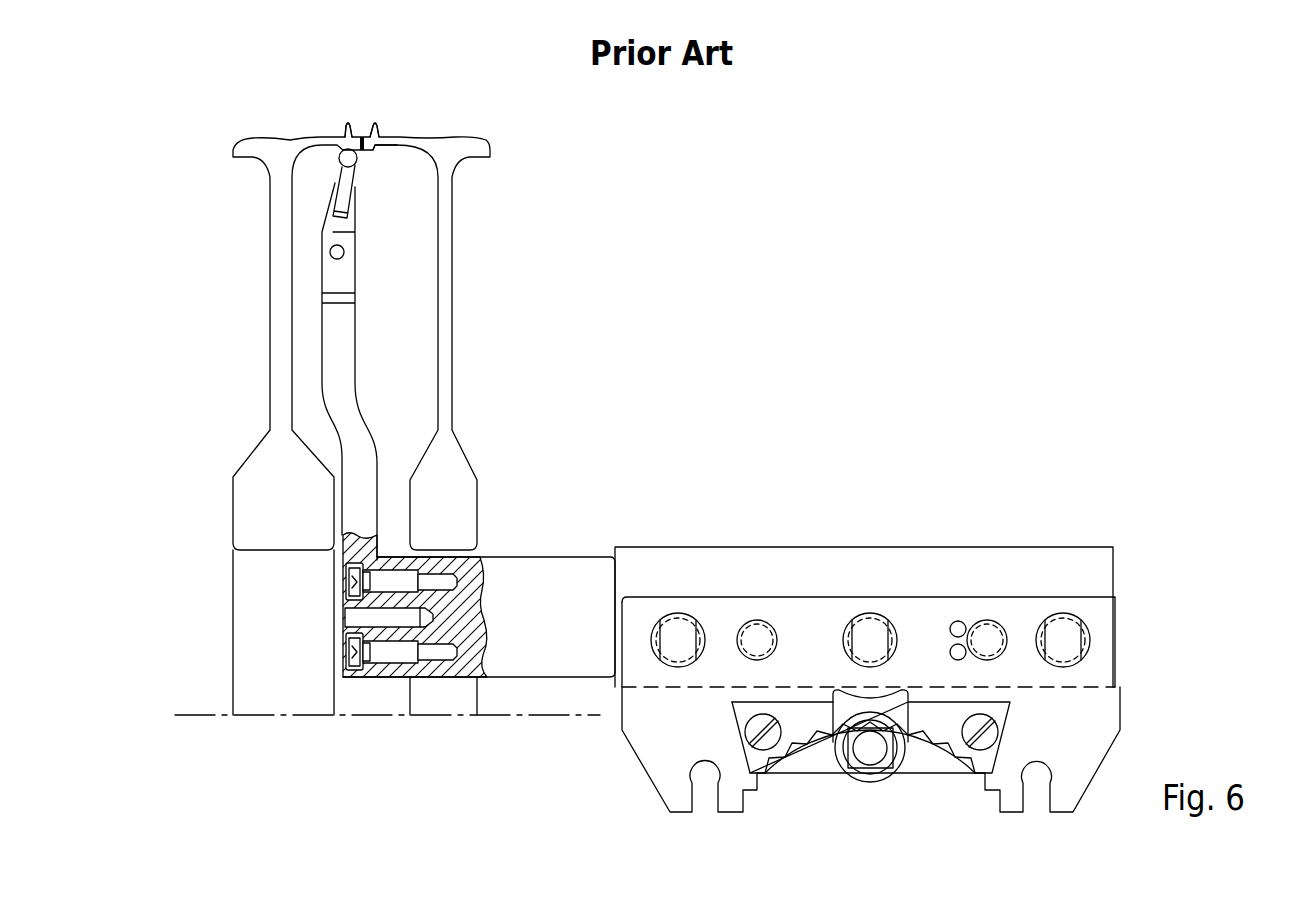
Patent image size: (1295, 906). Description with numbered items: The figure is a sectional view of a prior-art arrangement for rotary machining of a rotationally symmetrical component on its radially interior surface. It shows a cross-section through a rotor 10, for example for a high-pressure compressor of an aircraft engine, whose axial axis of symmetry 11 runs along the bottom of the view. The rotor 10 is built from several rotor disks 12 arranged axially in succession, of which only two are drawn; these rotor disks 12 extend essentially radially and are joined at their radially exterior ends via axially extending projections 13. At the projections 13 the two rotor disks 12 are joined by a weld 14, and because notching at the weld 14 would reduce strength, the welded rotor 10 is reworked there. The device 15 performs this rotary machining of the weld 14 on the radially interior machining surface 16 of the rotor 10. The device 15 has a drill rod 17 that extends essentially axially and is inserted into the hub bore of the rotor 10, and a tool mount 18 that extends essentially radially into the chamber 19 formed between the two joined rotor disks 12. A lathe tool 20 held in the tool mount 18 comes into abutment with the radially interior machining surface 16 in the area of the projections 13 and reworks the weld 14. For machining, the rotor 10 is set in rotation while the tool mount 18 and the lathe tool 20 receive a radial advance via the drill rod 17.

The rotor 10 is at (236, 127).
The axial axis of symmetry 11 is at (203, 714).
The rotor disks 12 is at (280, 243).
The projections 13 is at (338, 140).
The weld 14 is at (361, 136).
The device 15 is at (799, 525).
The radially interior machining surface 16 is at (380, 148).
The drill rod 17 is at (553, 572).
The tool mount 18 is at (353, 433).
The chamber 19 is at (428, 298).
The lathe tool 20 is at (346, 196).